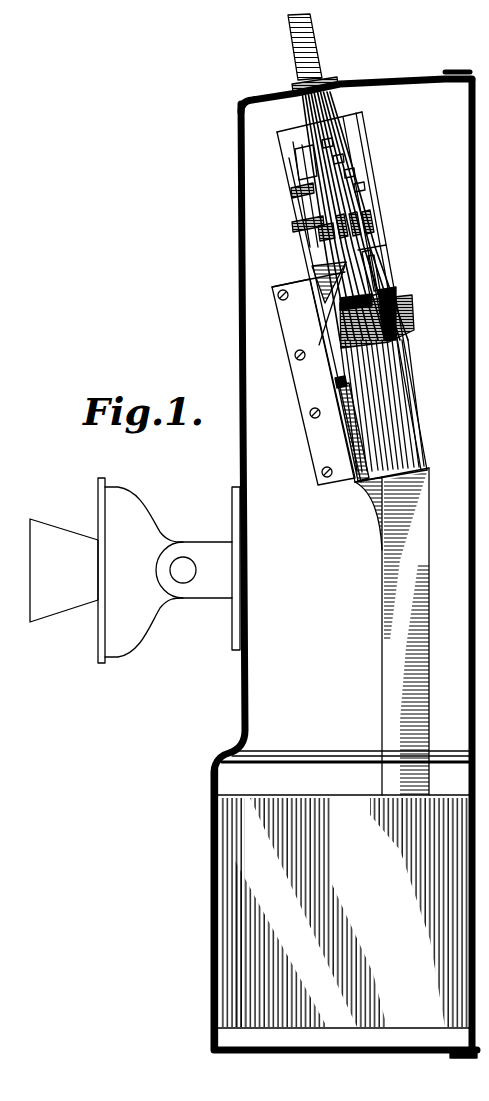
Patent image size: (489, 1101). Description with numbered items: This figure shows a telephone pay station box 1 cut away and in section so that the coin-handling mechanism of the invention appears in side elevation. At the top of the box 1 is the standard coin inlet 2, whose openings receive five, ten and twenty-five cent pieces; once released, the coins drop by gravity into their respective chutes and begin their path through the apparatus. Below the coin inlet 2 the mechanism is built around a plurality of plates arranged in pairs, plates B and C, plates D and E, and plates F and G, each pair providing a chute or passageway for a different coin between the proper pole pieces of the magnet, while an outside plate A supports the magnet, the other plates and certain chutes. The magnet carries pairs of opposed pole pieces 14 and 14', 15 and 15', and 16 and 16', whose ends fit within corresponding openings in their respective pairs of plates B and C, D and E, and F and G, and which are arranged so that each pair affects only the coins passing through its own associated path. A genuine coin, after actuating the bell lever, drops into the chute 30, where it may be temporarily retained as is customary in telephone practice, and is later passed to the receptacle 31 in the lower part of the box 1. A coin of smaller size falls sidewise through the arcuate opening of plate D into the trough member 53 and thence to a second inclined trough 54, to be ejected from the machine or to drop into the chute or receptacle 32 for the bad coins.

The telephone pay station box 1 is at (239, 288).
The coin inlet 2 is at (319, 50).
The pole piece 14 is at (301, 232).
The pole piece 14' is at (382, 224).
The pole piece 15 is at (305, 303).
The pole piece 15' is at (398, 268).
The pole piece 16 is at (380, 409).
The pole piece 16' is at (396, 317).
The chute 30 is at (417, 600).
The receptacle 31 is at (344, 912).
The chute or receptacle for bad coins 32 is at (367, 510).
The trough member 53 is at (327, 318).
The second inclined trough 54 is at (340, 367).
The outside plate A is at (327, 262).
The plate B is at (297, 152).
The plate C is at (313, 175).
The plate D is at (327, 146).
The plate E is at (337, 160).
The plate F is at (347, 173).
The plate G is at (358, 188).